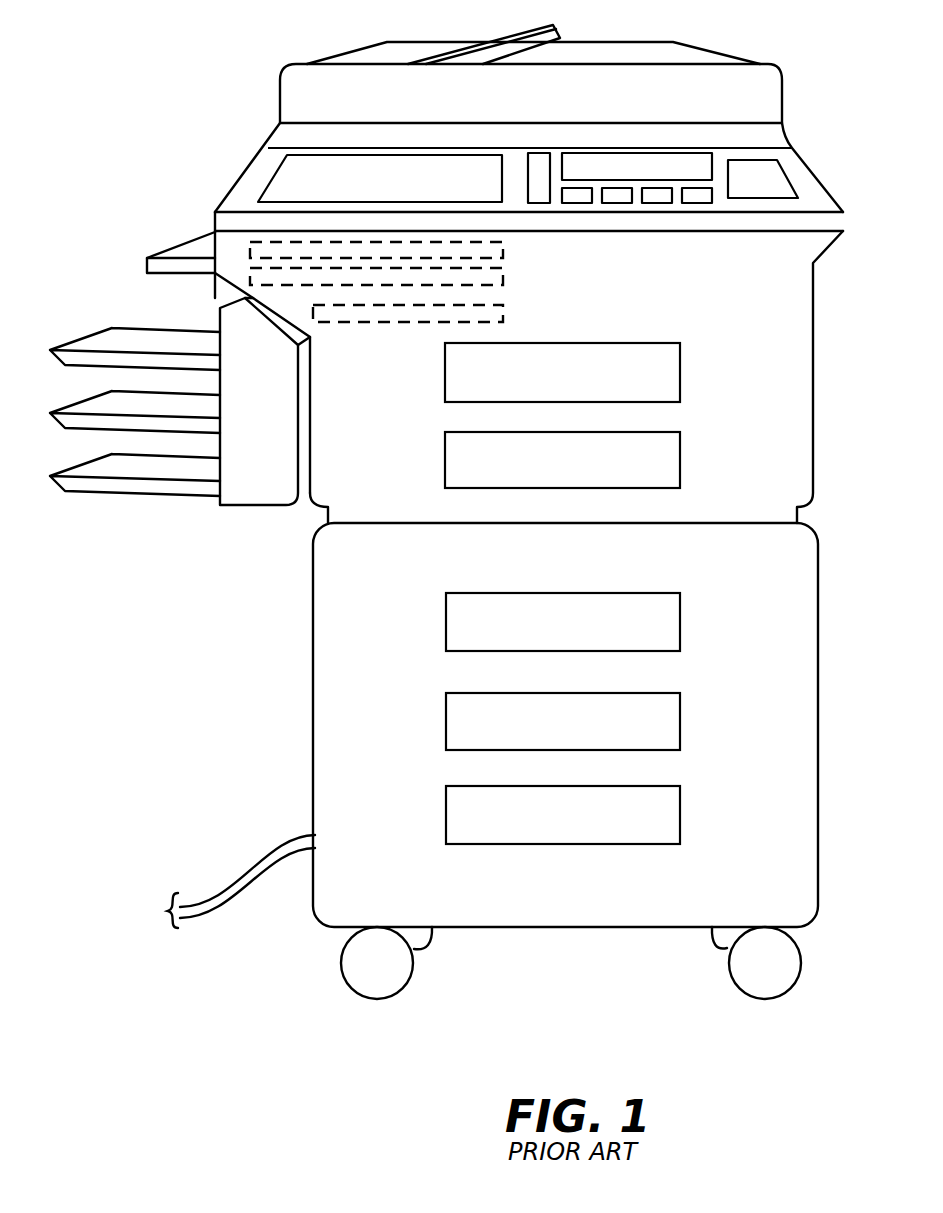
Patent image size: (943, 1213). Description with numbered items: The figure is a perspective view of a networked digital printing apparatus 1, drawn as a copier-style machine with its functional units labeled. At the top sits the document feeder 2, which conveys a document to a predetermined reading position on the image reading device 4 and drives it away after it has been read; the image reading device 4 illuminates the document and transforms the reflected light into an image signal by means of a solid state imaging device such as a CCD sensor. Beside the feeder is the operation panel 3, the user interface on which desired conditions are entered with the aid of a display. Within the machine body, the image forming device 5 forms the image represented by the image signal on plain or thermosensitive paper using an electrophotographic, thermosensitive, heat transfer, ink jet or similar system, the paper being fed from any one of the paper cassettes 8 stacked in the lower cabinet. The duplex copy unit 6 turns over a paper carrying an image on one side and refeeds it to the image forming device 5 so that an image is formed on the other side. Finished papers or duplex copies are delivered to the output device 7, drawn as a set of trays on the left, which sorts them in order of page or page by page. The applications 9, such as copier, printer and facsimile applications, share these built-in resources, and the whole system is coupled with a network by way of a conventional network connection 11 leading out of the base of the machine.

The digital printing apparatus 1 is at (196, 682).
The document feeder 2 is at (763, 82).
The operation panel 3 is at (293, 157).
The image reading device 4 is at (230, 162).
The image forming device 5 is at (680, 352).
The duplex copy unit 6 is at (680, 462).
The output device 7 is at (148, 508).
The paper cassettes 8 is at (680, 612).
The applications 9 is at (545, 277).
The network connection 11 is at (238, 872).